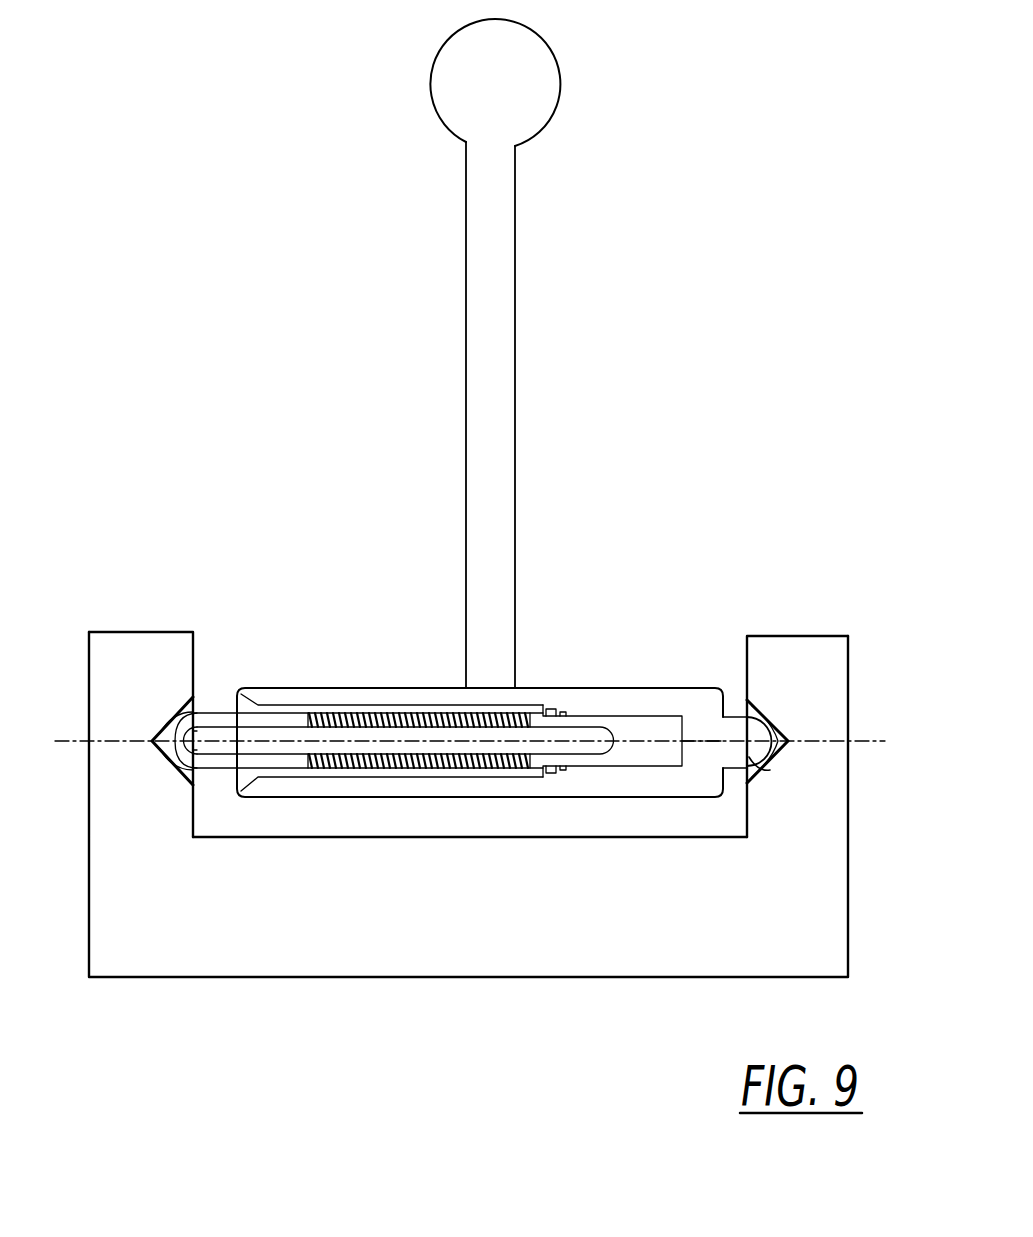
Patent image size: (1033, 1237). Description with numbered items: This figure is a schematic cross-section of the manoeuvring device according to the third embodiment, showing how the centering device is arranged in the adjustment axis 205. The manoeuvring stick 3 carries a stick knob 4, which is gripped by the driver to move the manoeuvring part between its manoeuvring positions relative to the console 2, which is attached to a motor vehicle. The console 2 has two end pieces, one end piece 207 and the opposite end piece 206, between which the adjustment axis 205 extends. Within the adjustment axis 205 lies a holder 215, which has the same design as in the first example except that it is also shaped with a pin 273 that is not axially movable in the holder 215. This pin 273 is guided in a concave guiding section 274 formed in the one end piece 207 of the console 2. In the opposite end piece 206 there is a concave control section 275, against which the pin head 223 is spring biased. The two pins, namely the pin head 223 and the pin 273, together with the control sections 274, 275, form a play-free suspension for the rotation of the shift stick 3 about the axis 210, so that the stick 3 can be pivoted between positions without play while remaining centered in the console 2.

The console 2 is at (848, 917).
The manoeuvring stick 3 is at (500, 347).
The stick knob 4 is at (532, 116).
The adjustment axis 205 is at (707, 728).
The end piece 206 is at (137, 660).
The end piece 207 is at (810, 857).
The axis 210 is at (70, 741).
The holder 215 is at (597, 695).
The pin head 223 is at (172, 757).
The pin 273 is at (753, 735).
The concave guiding section 274 is at (777, 757).
The concave control section 275 is at (183, 722).